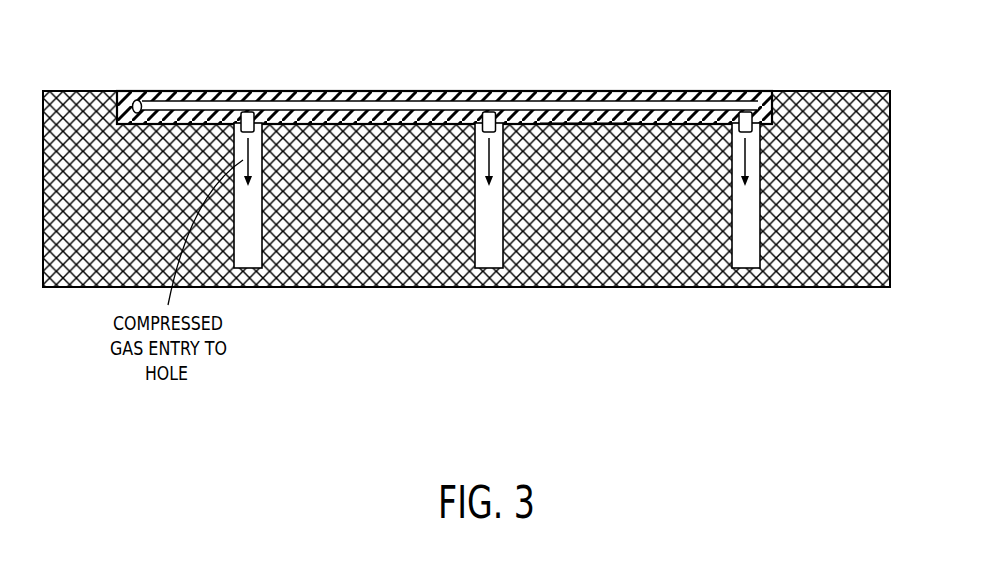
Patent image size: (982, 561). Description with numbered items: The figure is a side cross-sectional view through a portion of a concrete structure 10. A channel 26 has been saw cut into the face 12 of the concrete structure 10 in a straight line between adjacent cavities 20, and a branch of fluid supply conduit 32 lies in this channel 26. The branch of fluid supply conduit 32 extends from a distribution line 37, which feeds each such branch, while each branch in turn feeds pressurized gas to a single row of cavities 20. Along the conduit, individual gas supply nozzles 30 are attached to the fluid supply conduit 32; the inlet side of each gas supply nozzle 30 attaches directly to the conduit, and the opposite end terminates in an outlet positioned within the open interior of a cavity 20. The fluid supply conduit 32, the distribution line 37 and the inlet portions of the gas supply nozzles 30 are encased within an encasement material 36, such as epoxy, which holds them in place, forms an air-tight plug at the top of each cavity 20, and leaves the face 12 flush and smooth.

The concrete structure 10 is at (853, 292).
The face 12 is at (838, 92).
The cavity 20 is at (252, 233).
The channel 26 is at (592, 124).
The gas supply nozzle 30 is at (246, 112).
The fluid supply conduit 32 is at (577, 105).
The encasement material 36 is at (718, 98).
The distribution line 37 is at (138, 98).